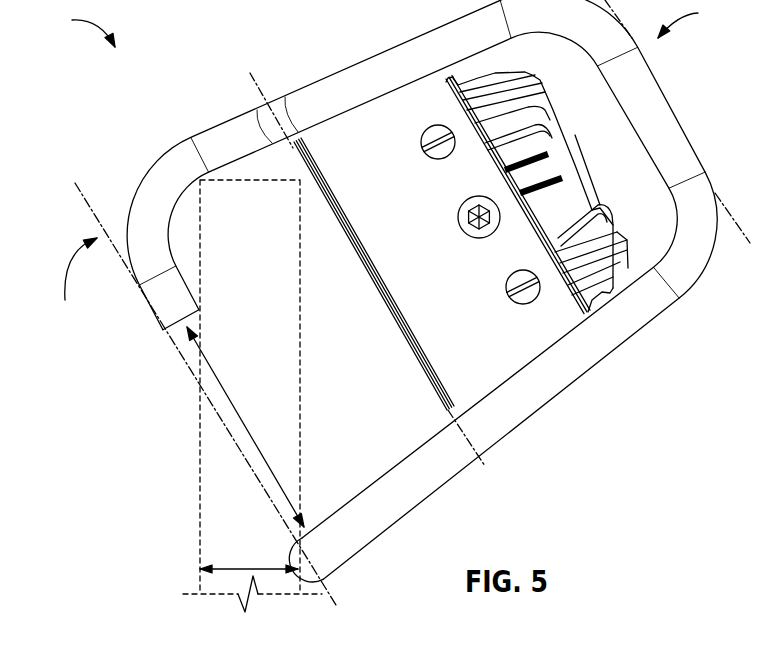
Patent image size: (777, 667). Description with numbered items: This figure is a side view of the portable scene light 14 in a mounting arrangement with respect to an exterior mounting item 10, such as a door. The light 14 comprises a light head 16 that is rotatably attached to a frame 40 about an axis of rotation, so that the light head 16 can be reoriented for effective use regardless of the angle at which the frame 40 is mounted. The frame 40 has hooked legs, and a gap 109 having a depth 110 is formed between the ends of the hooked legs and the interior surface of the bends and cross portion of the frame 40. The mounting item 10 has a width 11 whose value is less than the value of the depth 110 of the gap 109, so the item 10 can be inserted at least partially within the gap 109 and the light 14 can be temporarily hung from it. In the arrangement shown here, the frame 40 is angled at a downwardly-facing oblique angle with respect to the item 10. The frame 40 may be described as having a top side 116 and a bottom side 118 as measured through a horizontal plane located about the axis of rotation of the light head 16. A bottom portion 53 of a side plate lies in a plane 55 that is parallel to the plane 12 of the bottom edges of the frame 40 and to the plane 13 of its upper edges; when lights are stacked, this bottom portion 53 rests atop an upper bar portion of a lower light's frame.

The mounting item 10 is at (212, 495).
The width 11 is at (240, 569).
The plane 12 is at (186, 370).
The plane 13 is at (747, 233).
The scene light 14 is at (77, 25).
The light head 16 is at (477, 82).
The frame 40 is at (657, 110).
The portion 53 is at (307, 160).
The plane 55 is at (485, 466).
The gap 109 is at (175, 328).
The depth 110 is at (200, 413).
The top side 116 is at (702, 19).
The bottom side 118 is at (73, 287).